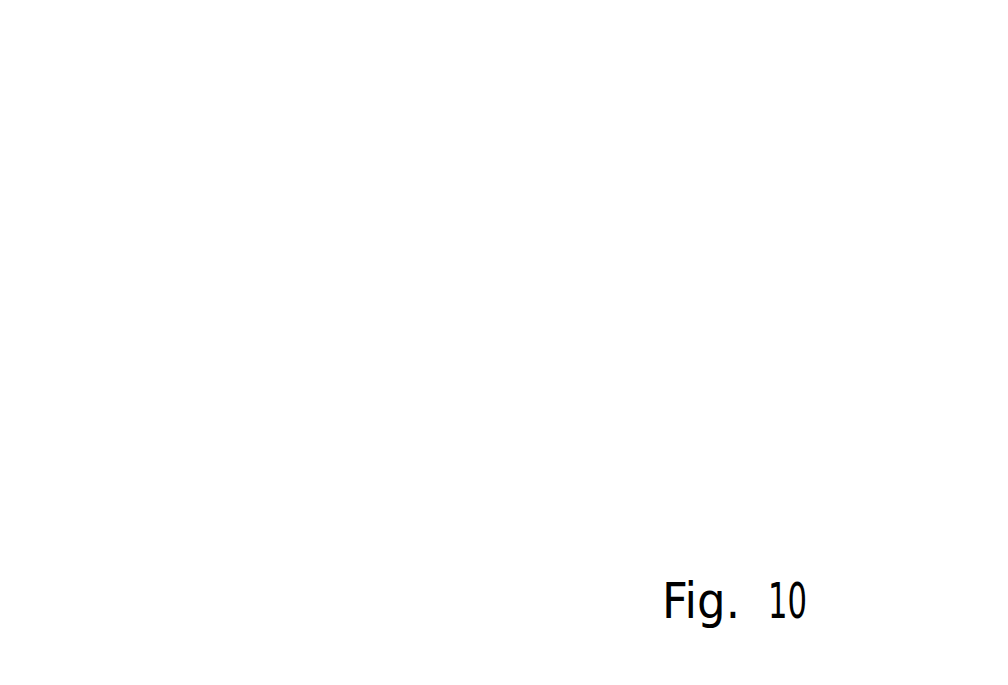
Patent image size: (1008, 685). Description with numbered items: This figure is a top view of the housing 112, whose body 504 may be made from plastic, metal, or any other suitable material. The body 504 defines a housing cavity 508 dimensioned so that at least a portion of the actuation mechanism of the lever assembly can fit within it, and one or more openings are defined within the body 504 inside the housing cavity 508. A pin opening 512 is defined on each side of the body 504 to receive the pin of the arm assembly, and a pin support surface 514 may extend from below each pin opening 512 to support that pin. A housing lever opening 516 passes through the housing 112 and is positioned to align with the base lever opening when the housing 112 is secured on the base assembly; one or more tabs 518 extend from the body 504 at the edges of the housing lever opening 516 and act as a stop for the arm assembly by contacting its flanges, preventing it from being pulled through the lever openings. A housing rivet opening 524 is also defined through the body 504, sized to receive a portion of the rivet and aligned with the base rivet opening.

The housing 112 is at (86, 188).
The body 504 is at (670, 232).
The housing cavity 508 is at (192, 250).
The pin opening 512 is at (534, 210).
The pin support surface 514 is at (505, 230).
The housing lever opening 516 is at (280, 292).
The tab 518 is at (331, 258).
The housing rivet opening 524 is at (454, 340).